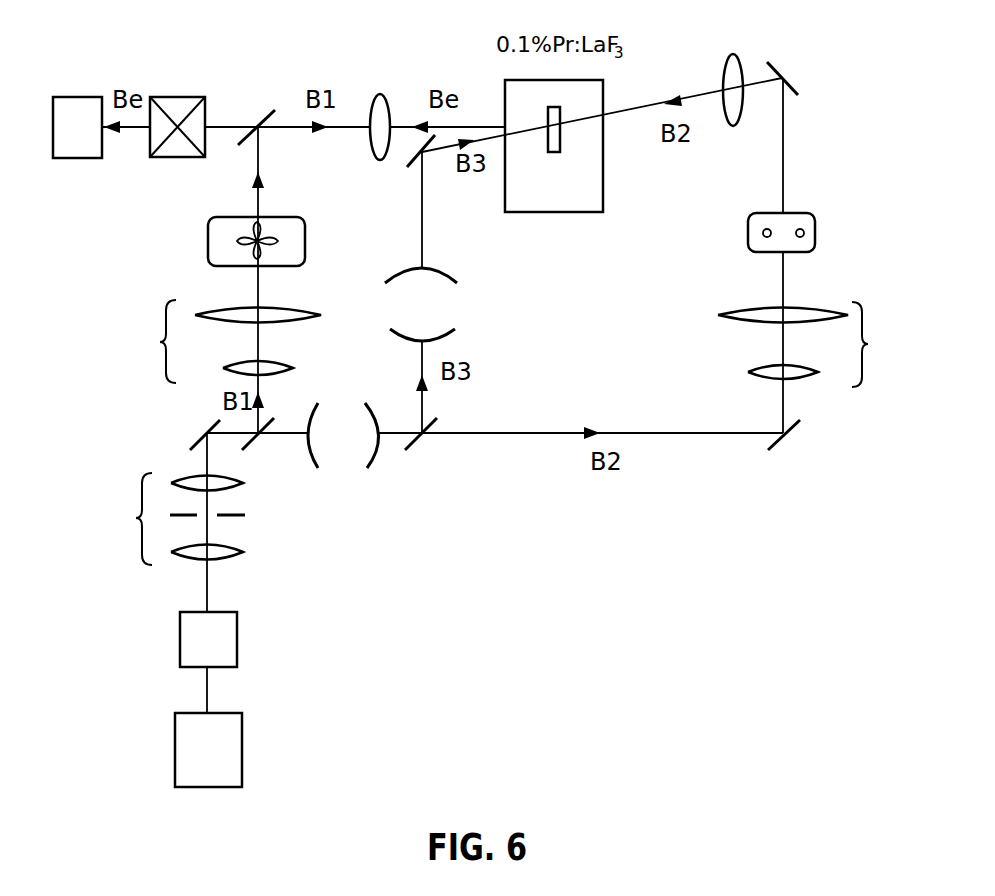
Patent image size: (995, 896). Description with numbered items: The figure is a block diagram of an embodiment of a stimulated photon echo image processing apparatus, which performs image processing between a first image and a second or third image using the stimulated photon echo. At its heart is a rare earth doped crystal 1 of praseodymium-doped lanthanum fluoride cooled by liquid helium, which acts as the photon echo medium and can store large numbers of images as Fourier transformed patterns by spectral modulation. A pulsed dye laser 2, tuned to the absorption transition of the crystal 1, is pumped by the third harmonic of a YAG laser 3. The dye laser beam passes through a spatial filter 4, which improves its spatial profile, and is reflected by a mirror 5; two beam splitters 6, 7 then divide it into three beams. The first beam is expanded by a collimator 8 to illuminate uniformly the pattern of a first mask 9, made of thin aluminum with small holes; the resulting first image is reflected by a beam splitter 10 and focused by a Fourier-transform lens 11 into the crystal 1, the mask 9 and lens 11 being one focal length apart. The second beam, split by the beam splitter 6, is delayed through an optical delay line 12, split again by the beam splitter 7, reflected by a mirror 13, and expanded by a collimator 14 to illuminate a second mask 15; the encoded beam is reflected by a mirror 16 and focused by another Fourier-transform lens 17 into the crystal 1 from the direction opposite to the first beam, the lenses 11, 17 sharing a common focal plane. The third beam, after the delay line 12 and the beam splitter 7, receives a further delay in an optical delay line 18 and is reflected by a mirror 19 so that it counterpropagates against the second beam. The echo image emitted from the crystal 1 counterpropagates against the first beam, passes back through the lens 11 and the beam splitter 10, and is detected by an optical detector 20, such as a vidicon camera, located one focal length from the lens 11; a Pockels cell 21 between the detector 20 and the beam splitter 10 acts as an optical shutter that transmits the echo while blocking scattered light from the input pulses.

The rare earth doped crystal 1 is at (505, 98).
The pulsed dye laser 2 is at (180, 655).
The YAG laser 3 is at (175, 762).
The spatial filter 4 is at (172, 519).
The mirror 5 is at (198, 433).
The beam splitter 6 is at (255, 445).
The beam splitter 7 is at (418, 445).
The collimator 8 is at (223, 341).
The first mask 9 is at (215, 240).
The beam splitter 10 is at (262, 108).
The Fourier-transform lens 11 is at (382, 104).
The optical delay line 12 is at (343, 468).
The mirror 13 is at (798, 426).
The collimator 14 is at (812, 344).
The second mask 15 is at (808, 242).
The mirror 16 is at (785, 72).
The Fourier-transform lens 17 is at (730, 62).
The optical delay line 18 is at (460, 307).
The mirror 19 is at (405, 162).
The optical detector 20 is at (72, 107).
The Pockels cell 21 is at (178, 108).